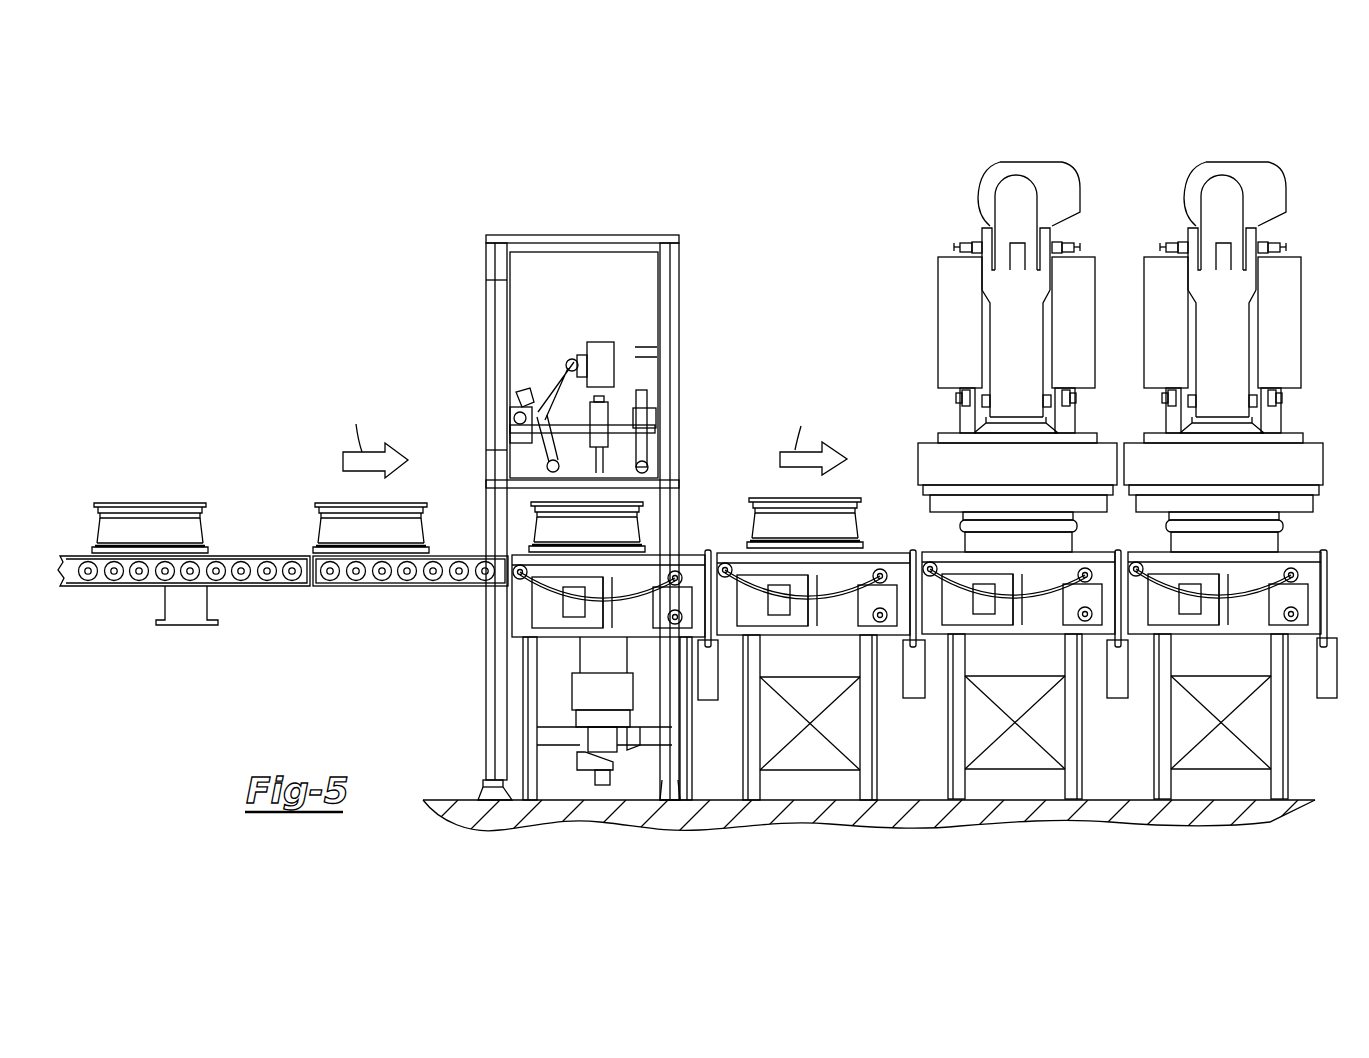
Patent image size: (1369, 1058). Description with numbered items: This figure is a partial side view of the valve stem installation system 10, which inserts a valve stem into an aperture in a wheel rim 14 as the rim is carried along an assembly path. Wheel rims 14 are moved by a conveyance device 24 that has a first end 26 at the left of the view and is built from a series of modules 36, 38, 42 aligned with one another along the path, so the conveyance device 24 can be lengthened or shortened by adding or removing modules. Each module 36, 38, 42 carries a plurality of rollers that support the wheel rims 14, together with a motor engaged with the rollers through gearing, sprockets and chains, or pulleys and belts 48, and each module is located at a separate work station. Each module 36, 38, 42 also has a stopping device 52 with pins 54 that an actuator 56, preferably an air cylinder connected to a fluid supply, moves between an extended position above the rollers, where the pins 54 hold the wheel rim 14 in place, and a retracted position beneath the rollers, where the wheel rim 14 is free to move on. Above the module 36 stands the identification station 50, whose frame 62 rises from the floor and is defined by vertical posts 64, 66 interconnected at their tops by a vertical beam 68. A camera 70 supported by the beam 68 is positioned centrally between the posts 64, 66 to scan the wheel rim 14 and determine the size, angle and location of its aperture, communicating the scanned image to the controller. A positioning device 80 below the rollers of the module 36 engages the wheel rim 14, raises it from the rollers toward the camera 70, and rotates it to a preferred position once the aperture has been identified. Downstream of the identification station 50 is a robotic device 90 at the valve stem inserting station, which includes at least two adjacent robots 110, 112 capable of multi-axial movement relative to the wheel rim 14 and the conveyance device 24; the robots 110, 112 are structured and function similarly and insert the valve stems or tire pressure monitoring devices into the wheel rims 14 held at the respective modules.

The valve stem installation system 10 is at (232, 360).
The wheel rim 14 is at (327, 504).
The conveyance device 24 is at (280, 592).
The first end 26 is at (85, 555).
The module 36 is at (515, 612).
The module 38 is at (830, 635).
The module 42 is at (1038, 632).
The pulleys and belts 48 is at (636, 600).
The identification station 50 is at (588, 222).
The stopping device 52 is at (704, 692).
The pins 54 is at (710, 552).
The actuator 56 is at (718, 700).
The frame 62 is at (680, 292).
The vertical post 64 is at (482, 333).
The vertical post 66 is at (678, 360).
The vertical beam 68 is at (628, 235).
The camera 70 is at (596, 343).
The positioning device 80 is at (572, 692).
The robotic device 90 is at (1125, 185).
The robot 110 is at (1035, 165).
The robot 112 is at (1245, 165).